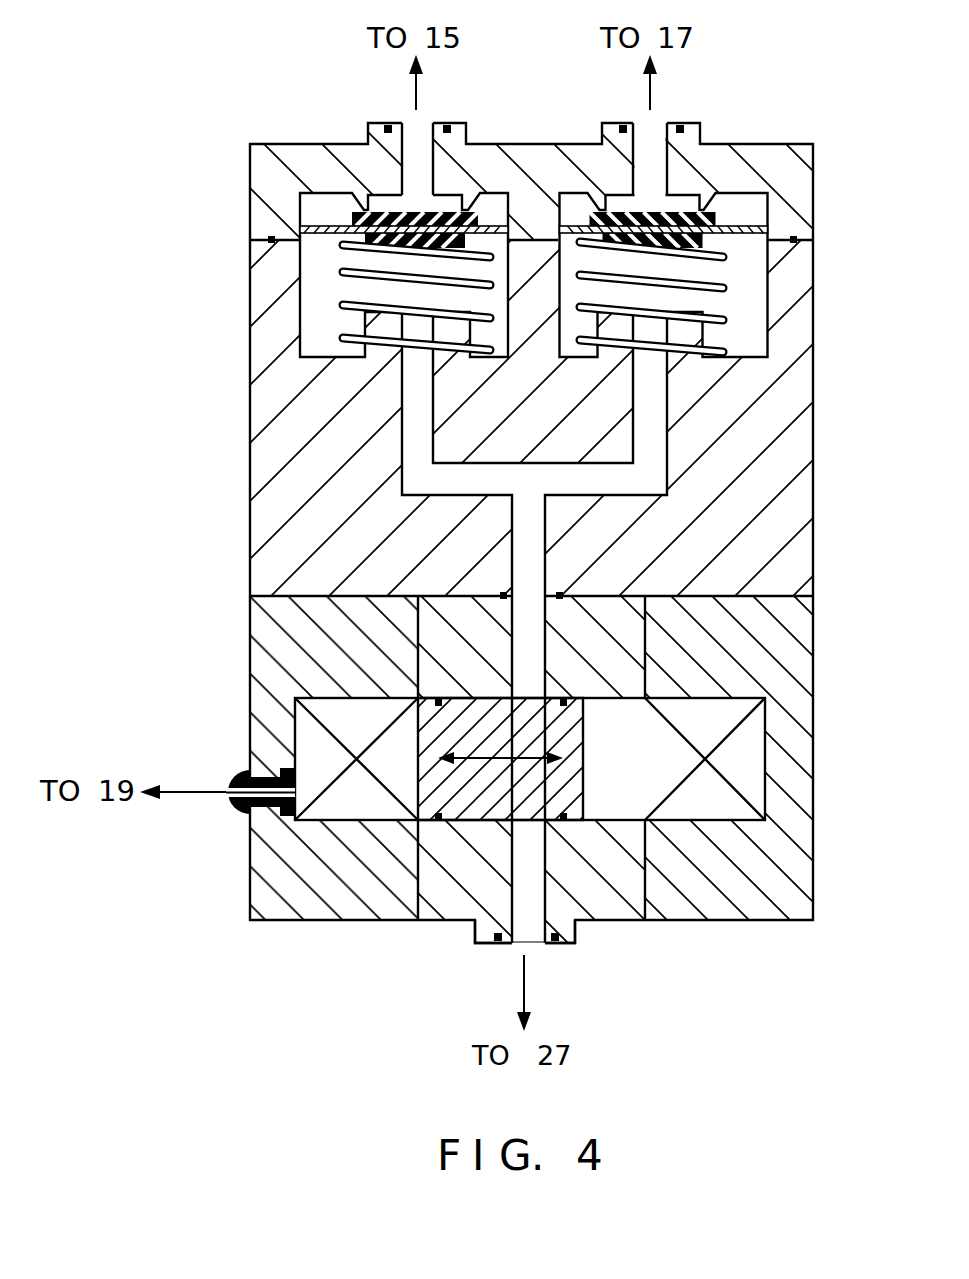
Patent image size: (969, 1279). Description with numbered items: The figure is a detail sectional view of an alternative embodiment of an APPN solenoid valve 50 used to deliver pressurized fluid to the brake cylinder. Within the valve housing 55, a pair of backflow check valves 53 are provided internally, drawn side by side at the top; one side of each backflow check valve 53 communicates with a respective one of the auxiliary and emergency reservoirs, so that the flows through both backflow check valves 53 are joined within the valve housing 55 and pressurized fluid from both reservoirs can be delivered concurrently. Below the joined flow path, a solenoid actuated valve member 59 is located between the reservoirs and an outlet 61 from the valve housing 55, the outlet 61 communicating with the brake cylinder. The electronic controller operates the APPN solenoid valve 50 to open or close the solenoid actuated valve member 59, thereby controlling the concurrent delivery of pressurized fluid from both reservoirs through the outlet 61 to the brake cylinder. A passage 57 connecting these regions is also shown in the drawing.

The APPN solenoid valve 50 is at (533, 496).
The backflow check valve 53 is at (310, 293).
The valve housing 55 is at (250, 543).
The passage 57 is at (528, 495).
The solenoid actuated valve member 59 is at (440, 720).
The outlet 61 is at (538, 925).